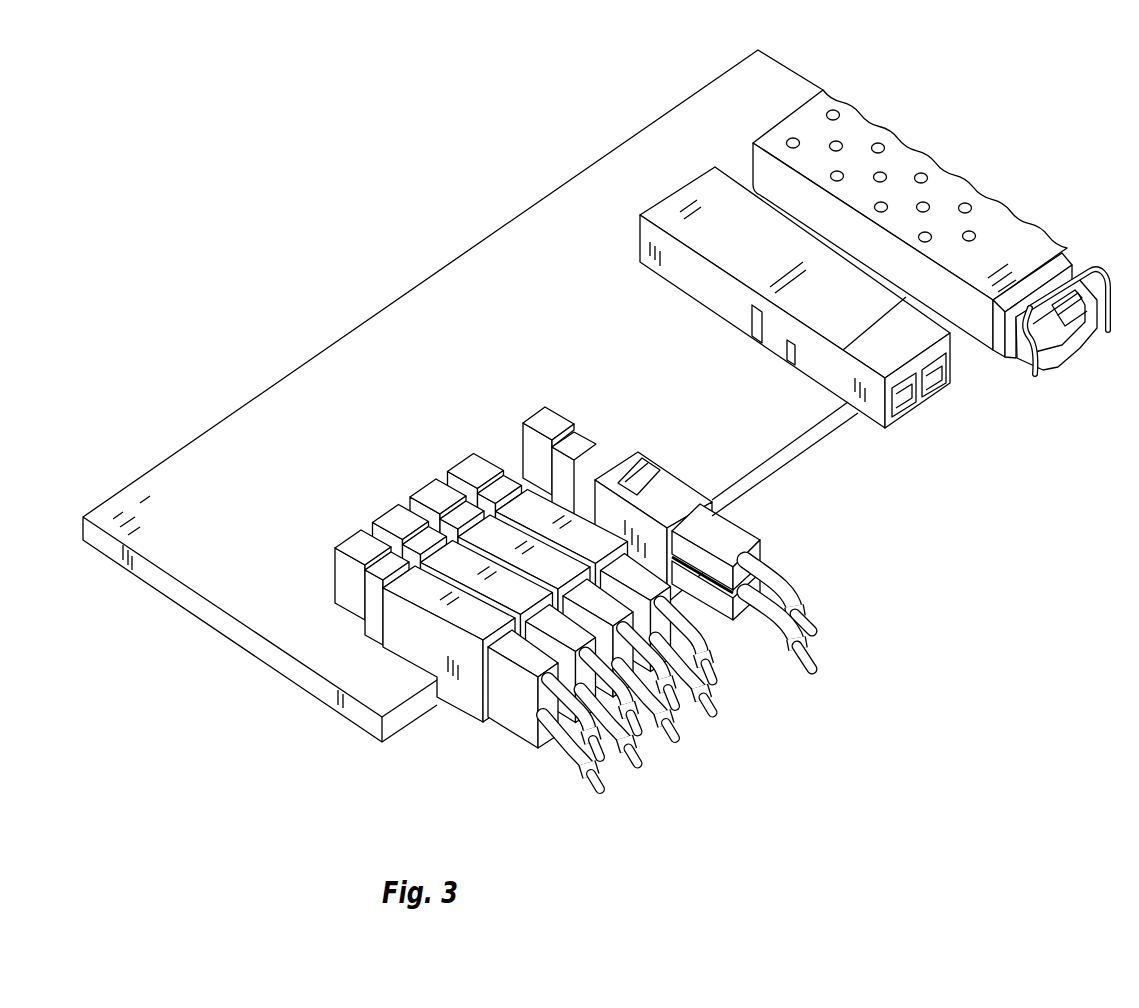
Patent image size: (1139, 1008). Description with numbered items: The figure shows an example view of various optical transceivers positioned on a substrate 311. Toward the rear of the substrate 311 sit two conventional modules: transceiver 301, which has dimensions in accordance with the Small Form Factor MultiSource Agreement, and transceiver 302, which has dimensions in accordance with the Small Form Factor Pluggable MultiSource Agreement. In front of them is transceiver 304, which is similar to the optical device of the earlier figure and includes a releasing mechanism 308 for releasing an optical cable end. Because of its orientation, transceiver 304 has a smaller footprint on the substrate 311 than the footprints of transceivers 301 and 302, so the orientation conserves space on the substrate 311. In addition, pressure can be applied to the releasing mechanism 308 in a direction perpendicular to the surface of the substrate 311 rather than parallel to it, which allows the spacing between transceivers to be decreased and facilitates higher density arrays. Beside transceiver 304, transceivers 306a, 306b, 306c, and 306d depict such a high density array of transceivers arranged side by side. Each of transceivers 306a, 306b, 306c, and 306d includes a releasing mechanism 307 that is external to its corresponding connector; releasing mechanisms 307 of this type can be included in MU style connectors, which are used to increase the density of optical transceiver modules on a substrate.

The transceiver 301 is at (930, 190).
The transceiver 302 is at (863, 318).
The transceiver 304 is at (522, 405).
The transceiver 306a is at (352, 540).
The transceiver 306b is at (385, 522).
The transceiver 306c is at (420, 487).
The transceiver 306d is at (458, 468).
The releasing mechanism 307 is at (627, 573).
The releasing mechanism 308 is at (660, 465).
The substrate 311 is at (267, 588).